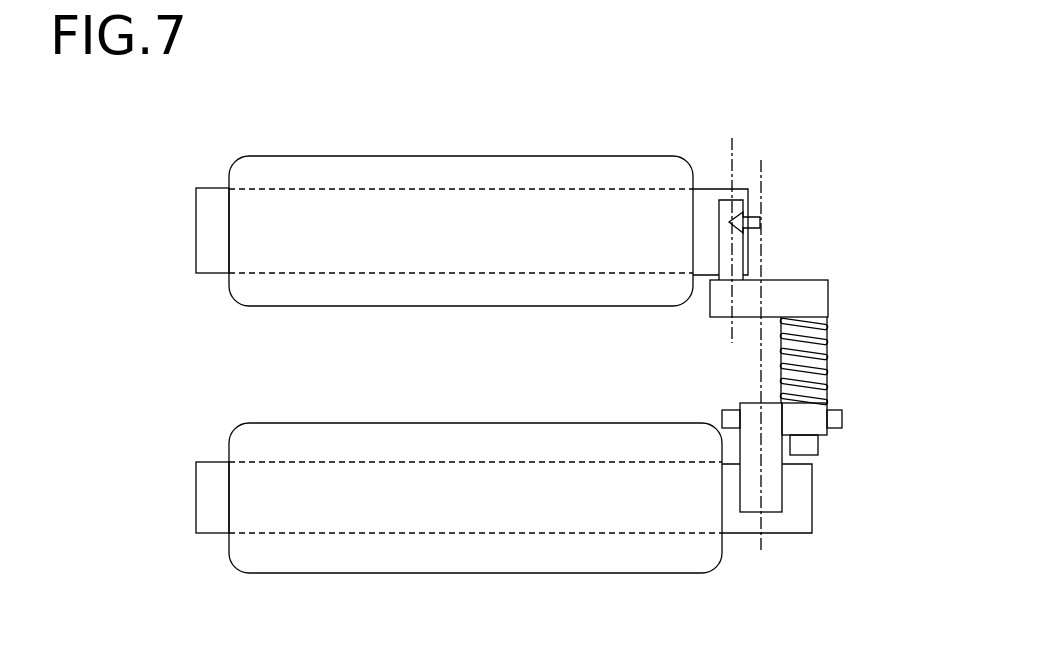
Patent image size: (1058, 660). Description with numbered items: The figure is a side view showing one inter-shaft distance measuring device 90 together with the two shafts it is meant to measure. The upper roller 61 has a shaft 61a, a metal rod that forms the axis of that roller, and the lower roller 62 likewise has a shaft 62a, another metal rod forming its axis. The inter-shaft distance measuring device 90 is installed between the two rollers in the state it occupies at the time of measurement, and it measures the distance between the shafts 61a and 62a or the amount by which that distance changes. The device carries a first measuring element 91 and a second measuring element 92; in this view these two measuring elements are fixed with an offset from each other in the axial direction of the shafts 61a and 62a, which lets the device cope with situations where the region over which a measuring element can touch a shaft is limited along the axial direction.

The upper roller 61 is at (527, 153).
The lower roller 62 is at (553, 581).
The shaft 61a is at (713, 188).
The shaft 62a is at (733, 533).
The inter-shaft distance measuring device 90 is at (813, 432).
The first measuring element 91 is at (737, 200).
The second measuring element 92 is at (770, 512).